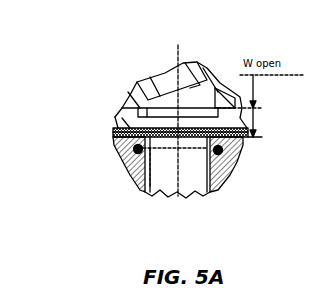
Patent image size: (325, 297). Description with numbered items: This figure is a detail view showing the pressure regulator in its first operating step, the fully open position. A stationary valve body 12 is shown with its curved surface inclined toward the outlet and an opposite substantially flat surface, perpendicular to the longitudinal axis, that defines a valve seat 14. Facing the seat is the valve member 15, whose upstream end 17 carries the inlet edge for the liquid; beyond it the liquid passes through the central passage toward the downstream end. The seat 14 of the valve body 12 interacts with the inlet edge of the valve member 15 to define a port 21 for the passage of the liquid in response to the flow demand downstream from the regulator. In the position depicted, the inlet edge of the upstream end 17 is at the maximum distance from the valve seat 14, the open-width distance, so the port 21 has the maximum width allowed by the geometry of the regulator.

The valve body 12 is at (163, 72).
The valve seat 14 is at (123, 117).
The port 21 is at (116, 150).
The upstream end 17 is at (167, 170).
The valve member 15 is at (218, 188).